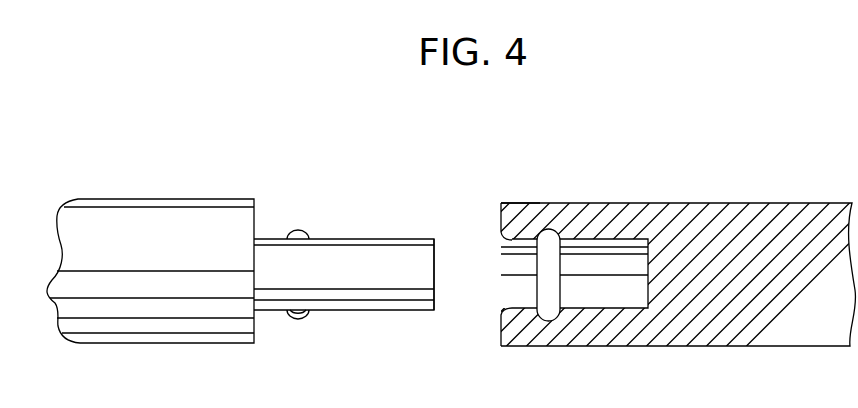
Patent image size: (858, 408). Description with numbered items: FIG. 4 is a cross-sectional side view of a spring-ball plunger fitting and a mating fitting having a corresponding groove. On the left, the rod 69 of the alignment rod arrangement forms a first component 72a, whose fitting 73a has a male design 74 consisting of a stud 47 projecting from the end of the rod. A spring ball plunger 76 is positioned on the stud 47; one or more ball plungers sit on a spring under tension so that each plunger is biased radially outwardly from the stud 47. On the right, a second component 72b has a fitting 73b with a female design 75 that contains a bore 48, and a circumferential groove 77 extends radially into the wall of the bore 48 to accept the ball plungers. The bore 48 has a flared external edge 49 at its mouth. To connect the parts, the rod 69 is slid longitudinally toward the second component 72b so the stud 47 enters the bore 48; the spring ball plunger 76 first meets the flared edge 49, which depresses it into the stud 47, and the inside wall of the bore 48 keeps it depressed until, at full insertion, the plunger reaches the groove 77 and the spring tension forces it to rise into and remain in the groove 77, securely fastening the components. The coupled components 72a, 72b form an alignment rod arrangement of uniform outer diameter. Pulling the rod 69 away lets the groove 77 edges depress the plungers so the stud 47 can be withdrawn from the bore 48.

The rod 69 is at (133, 237).
The first component 72a is at (215, 227).
The spring ball plunger 76 is at (298, 228).
The fitting 73a is at (328, 192).
The stud 47 is at (320, 275).
The male design 74 is at (304, 335).
The flared external edge 49 is at (498, 237).
The fitting 73b is at (481, 201).
The circumferential groove 77 is at (556, 230).
The second component 72b is at (727, 248).
The female design 75 is at (475, 310).
The bore 48 is at (610, 283).